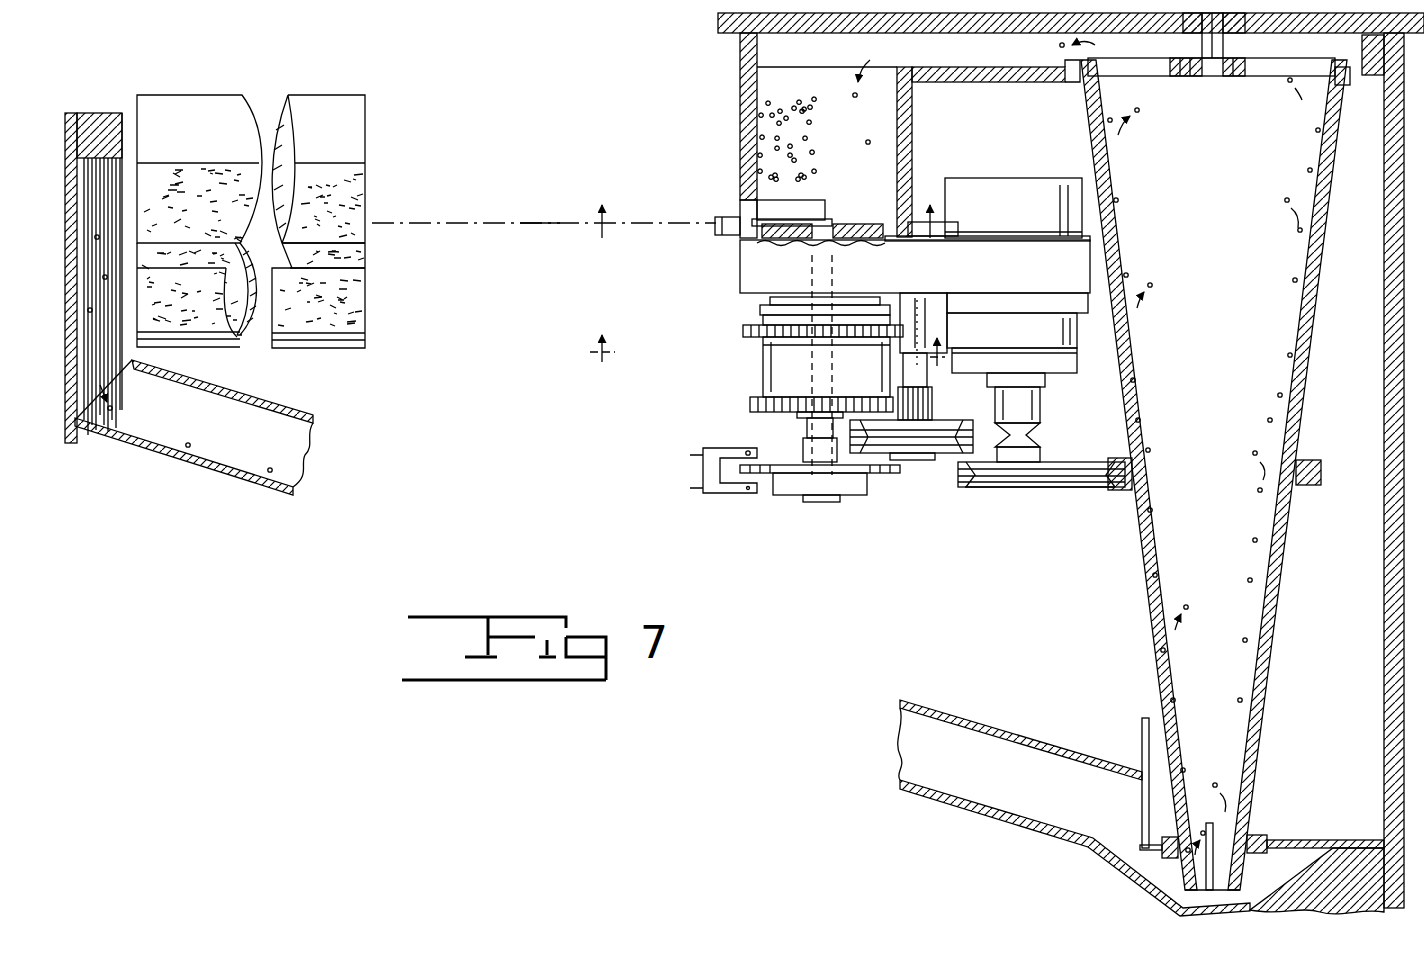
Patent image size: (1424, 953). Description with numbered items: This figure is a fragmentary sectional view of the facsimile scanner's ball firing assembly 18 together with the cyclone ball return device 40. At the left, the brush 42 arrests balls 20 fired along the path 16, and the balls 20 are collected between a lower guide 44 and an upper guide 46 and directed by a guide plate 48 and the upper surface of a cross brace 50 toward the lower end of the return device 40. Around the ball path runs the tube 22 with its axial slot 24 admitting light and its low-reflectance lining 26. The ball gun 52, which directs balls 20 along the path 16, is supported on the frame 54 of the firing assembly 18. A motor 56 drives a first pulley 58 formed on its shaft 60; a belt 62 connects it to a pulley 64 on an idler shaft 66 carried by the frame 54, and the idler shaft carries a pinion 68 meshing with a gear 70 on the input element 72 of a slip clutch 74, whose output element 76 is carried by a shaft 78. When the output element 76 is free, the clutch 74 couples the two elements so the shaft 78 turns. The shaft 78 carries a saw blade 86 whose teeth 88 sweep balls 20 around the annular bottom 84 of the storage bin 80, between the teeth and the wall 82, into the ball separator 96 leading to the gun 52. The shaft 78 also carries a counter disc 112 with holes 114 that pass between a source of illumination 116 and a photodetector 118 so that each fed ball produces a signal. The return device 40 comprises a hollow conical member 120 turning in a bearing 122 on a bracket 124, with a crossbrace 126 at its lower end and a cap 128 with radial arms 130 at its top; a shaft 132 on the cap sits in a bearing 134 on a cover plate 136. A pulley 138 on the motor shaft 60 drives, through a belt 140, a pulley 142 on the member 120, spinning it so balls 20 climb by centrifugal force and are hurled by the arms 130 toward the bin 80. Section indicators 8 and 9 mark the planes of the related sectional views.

The path 16 is at (548, 227).
The firing assembly 18 is at (700, 103).
The balls 20 is at (479, 223).
The tube 22 is at (350, 95).
The axial slot 24 is at (357, 262).
The lining 26 is at (357, 308).
The ball return device 40 is at (1322, 376).
The brush 42 is at (118, 182).
The lower guide 44 is at (208, 488).
The upper guide 46 is at (258, 395).
The guide plate 48 is at (1093, 847).
The cross brace 50 is at (1330, 848).
The ball gun 52 is at (733, 213).
The frame 54 is at (740, 275).
The motor 56 is at (1085, 222).
The first pulley 58 is at (1018, 462).
The shaft 60 is at (1045, 410).
The belt 62 is at (1042, 442).
The pulley 64 is at (950, 455).
The idler shaft 66 is at (903, 362).
The pinion 68 is at (932, 400).
The gear 70 is at (752, 406).
The input element 72 is at (760, 378).
The slip clutch 74 is at (740, 344).
The output element 76 is at (786, 352).
The shaft 78 is at (836, 278).
The ball storage bin 80 is at (888, 166).
The wall 82 is at (912, 128).
The annular bottom 84 is at (892, 243).
The saw blade 86 is at (754, 241).
The teeth 88 is at (888, 233).
The ball separator 96 is at (820, 200).
The counter disc 112 is at (890, 476).
The holes 114 is at (845, 480).
The source of illumination 116 is at (748, 450).
The photodetector 118 is at (742, 488).
The hollow conical member 120 is at (1270, 633).
The bearing 122 is at (1262, 832).
The bracket 124 is at (1142, 720).
The crossbrace 126 is at (1213, 870).
The cap 128 is at (1238, 78).
The arms 130 is at (1262, 70).
The shaft 132 is at (1180, 62).
The bearing 134 is at (1233, 40).
The cover plate 136 is at (1025, 35).
The pulley 138 is at (1010, 490).
The belt 140 is at (1095, 492).
The pulley 142 is at (1314, 498).
The section line 8 is at (767, 333).
The section line 9 is at (767, 203).